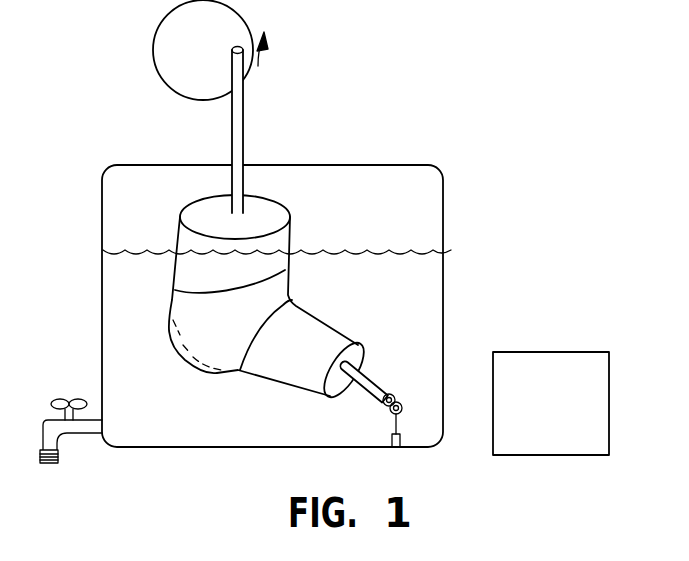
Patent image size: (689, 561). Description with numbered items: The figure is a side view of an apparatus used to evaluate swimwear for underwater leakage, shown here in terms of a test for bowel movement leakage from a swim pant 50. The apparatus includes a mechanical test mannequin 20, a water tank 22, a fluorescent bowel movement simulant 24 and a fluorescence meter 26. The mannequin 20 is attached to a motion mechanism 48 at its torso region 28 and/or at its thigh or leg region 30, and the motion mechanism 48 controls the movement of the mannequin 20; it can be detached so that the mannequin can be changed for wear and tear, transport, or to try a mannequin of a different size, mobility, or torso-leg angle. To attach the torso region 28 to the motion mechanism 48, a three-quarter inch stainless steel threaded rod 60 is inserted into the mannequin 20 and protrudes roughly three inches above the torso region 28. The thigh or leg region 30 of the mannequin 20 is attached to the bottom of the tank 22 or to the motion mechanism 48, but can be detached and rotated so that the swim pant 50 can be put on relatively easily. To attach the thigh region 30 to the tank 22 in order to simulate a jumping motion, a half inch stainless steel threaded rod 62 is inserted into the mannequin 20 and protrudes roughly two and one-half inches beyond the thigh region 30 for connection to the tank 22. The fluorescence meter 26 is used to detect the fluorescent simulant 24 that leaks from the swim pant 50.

The mechanical test mannequin 20 is at (249, 288).
The water tank 22 is at (452, 176).
The fluorescent bowel movement (BM) simulant 24 is at (218, 377).
The fluorescence meter 26 is at (531, 366).
The torso region 28 is at (180, 234).
The thigh or leg region 30 is at (305, 386).
The motion mechanism 48 is at (158, 66).
The swim pant 50 is at (267, 296).
The threaded rod 60 is at (258, 103).
The threaded rod 62 is at (377, 378).